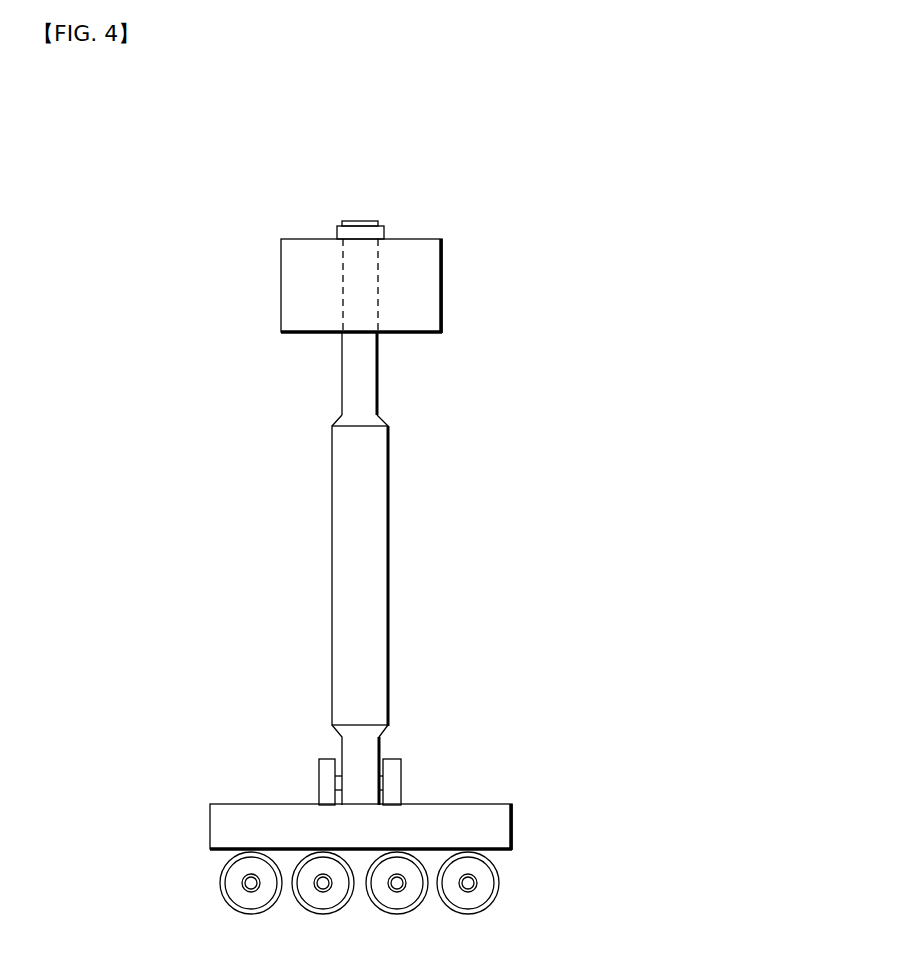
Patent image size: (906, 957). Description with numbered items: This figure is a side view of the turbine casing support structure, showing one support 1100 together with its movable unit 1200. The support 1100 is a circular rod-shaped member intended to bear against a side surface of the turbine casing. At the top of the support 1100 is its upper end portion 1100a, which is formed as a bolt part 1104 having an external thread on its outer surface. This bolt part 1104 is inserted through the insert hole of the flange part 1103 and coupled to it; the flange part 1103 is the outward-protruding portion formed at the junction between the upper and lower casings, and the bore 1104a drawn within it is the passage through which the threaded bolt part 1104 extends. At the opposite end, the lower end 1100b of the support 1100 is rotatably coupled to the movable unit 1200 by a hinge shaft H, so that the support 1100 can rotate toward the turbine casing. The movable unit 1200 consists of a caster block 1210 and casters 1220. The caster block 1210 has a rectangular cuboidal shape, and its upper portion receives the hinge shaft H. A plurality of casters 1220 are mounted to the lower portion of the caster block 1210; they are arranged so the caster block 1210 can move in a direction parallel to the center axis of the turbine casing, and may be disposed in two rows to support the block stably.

The support 1100 is at (363, 632).
The upper end portion of main body 1100a is at (360, 375).
The lower end 1100b is at (367, 745).
The flange part 1103 is at (420, 290).
The bolt part 1104 is at (320, 362).
The insertion hole 1104a is at (345, 272).
The hinge shaft H is at (327, 783).
The movable unit 1200 is at (499, 861).
The caster block 1210 is at (488, 827).
The caster 1220 is at (498, 878).